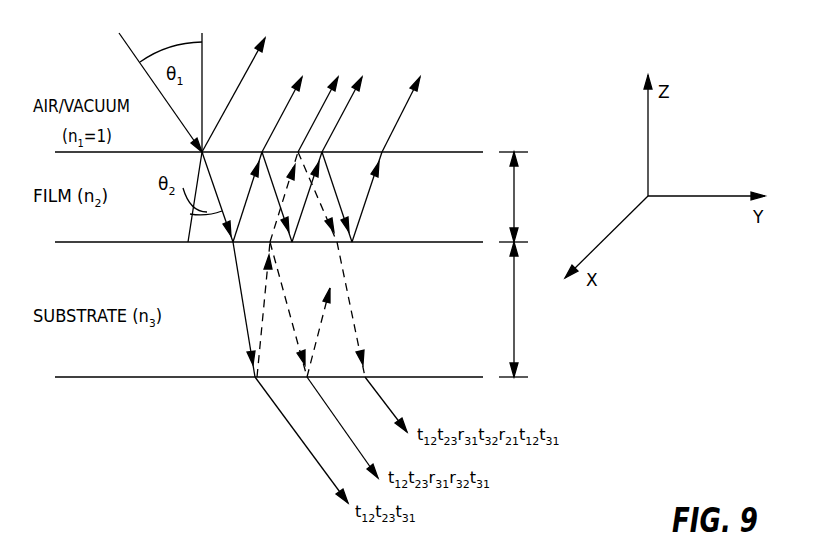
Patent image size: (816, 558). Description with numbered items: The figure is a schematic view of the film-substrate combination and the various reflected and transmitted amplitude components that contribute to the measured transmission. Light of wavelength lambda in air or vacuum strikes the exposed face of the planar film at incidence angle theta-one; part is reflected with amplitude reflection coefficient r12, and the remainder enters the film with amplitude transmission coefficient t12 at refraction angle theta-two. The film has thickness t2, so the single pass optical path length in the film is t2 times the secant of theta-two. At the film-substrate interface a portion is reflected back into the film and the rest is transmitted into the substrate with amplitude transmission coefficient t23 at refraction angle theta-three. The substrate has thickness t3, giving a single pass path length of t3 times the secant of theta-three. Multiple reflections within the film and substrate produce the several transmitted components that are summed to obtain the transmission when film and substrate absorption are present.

The amplitude reflection coefficient r12 is at (240, 83).
The amplitude transmission coefficient t12 is at (220, 197).
The amplitude transmission coefficient t23 is at (233, 309).
The film thickness t2 is at (516, 193).
The substrate thickness t3 is at (516, 305).